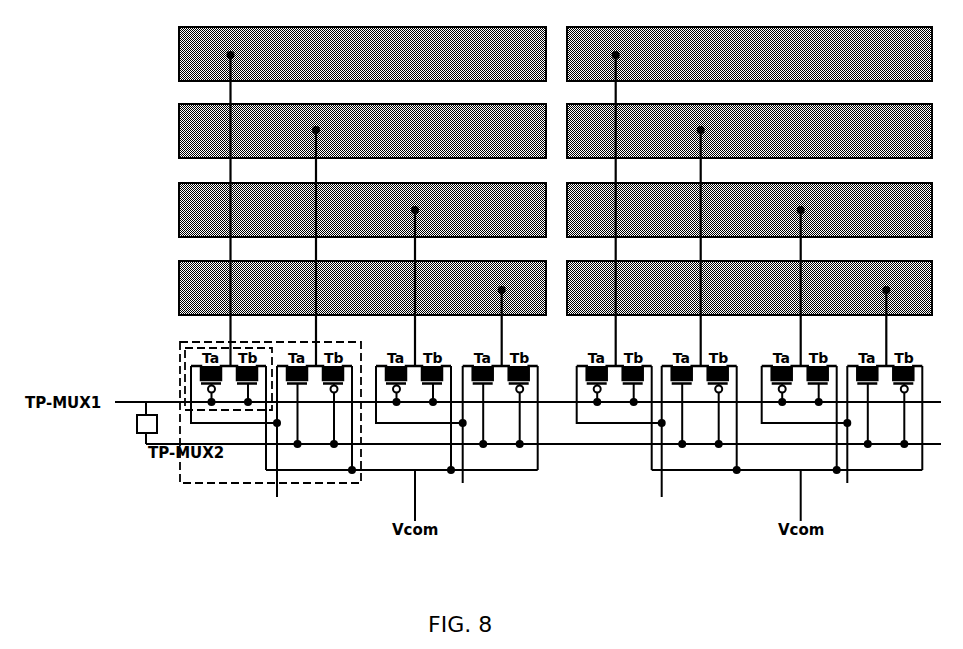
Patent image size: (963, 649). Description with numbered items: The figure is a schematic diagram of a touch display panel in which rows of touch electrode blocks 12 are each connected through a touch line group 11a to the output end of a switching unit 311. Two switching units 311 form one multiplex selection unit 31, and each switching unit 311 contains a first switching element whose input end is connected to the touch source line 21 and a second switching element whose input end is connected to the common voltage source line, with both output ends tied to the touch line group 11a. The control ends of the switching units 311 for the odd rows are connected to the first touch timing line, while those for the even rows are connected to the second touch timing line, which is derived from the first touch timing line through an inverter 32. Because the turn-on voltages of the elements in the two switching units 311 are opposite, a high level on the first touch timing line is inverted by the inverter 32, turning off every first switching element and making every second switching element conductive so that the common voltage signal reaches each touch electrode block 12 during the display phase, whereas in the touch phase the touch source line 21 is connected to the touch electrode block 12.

The touch electrode block 12 is at (194, 54).
The touch line group 11a is at (233, 168).
The multiplex selection unit 31 is at (183, 341).
The switching unit 311 is at (186, 379).
The inverter 32 is at (153, 425).
The touch source line 21 is at (277, 497).